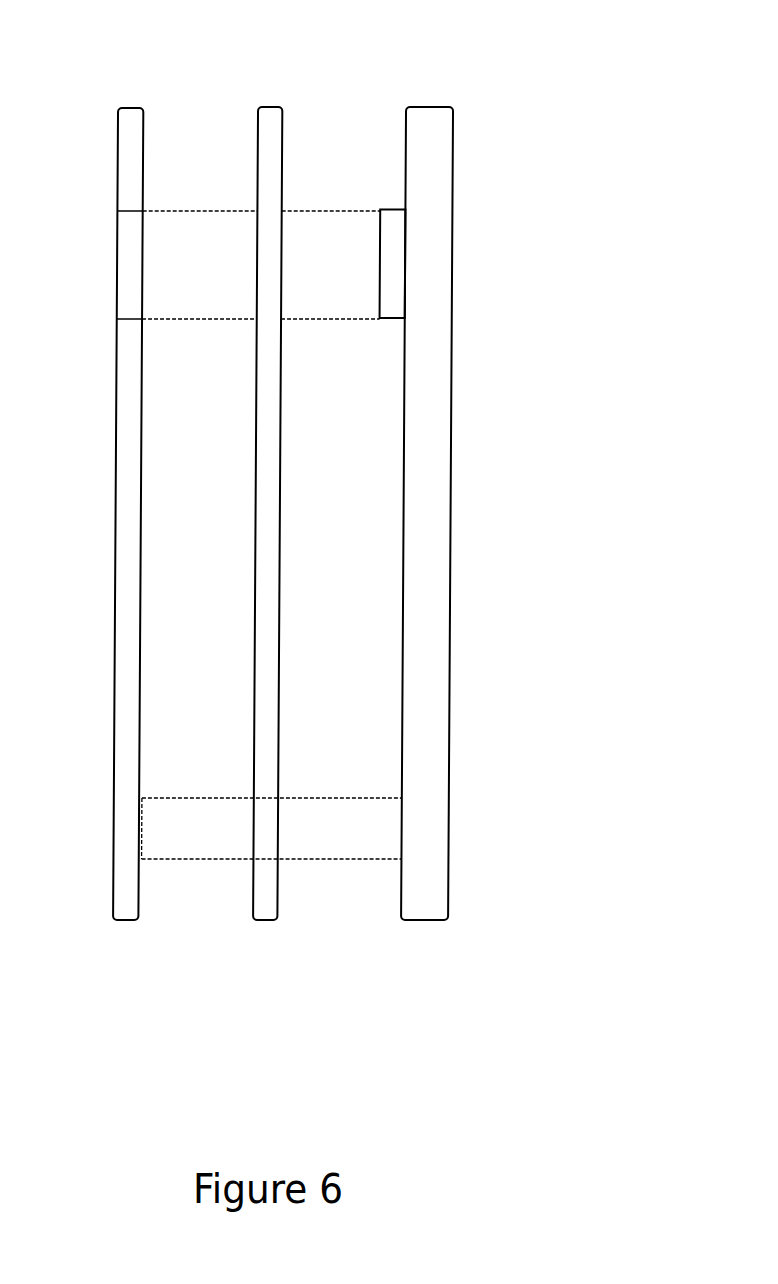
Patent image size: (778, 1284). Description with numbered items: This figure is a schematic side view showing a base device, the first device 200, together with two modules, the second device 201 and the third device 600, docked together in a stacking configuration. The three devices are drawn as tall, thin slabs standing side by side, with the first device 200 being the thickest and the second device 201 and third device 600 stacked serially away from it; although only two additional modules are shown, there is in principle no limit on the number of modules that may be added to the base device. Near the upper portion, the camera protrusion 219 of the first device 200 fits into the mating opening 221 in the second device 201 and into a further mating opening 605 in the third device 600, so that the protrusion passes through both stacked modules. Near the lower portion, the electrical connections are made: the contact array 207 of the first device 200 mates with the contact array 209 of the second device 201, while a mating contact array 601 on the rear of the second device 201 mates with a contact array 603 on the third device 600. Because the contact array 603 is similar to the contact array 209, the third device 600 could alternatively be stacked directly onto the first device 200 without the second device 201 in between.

The third device 600 is at (139, 103).
The second device 201 is at (275, 102).
The first device 200 is at (434, 103).
The mating opening 605 is at (100, 210).
The mating opening 221 is at (245, 209).
The camera protrusion 219 is at (392, 268).
The contact array 603 is at (140, 830).
The mating contact array 601 is at (253, 830).
The contact array 209 is at (278, 830).
The contact array 207 is at (400, 830).